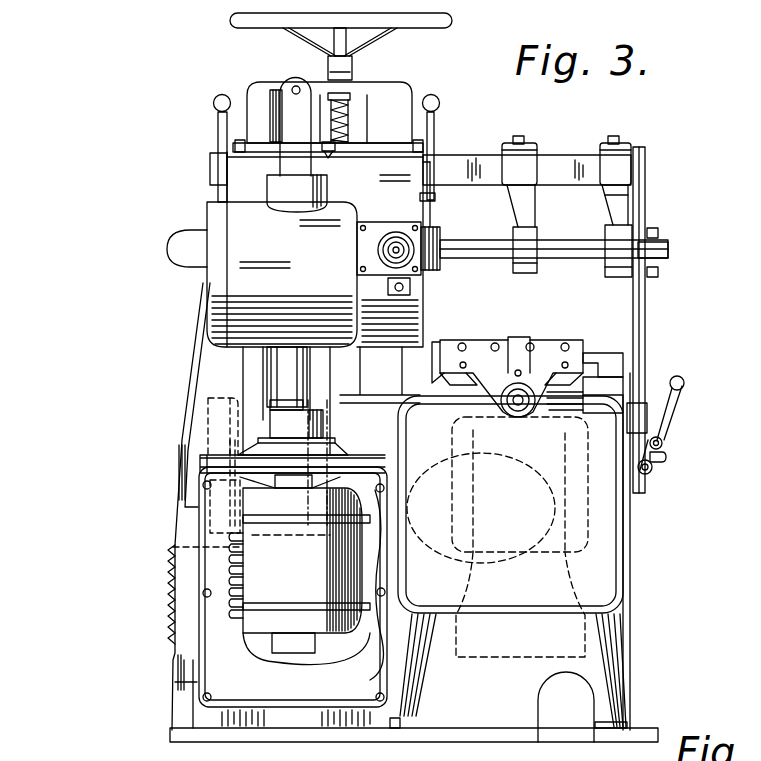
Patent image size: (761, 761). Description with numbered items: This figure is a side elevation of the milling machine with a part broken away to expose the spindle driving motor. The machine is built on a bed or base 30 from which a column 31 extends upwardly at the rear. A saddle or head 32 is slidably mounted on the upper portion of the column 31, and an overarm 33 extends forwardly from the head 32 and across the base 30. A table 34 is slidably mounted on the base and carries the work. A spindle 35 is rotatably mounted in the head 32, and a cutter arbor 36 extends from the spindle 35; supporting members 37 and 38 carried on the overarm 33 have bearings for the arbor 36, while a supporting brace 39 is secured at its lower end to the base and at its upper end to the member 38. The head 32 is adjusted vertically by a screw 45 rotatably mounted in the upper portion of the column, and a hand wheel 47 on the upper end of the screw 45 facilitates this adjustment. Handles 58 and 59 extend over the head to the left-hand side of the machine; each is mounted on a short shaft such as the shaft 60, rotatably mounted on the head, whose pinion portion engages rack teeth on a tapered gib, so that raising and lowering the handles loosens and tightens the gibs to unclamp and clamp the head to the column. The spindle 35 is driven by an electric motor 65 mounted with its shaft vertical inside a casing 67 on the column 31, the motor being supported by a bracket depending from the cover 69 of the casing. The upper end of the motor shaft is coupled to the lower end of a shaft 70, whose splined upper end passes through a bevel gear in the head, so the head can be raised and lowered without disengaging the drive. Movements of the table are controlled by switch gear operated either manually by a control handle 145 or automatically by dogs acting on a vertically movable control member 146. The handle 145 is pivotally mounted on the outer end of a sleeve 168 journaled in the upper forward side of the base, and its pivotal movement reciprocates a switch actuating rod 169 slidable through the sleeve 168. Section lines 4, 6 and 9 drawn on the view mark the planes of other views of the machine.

The section line 4- 4 is at (167, 248).
The section line 6- 6 is at (350, 13).
The section line 9- 9 is at (520, 600).
The base 30 is at (572, 670).
The column 31 is at (198, 383).
The head 32 is at (405, 173).
The overarm 33 is at (482, 163).
The table 34 is at (572, 343).
The spindle 35 is at (433, 272).
The cutter arbor 36 is at (492, 254).
The supporting member 37 is at (527, 215).
The supporting member 38 is at (617, 205).
The supporting brace 39 is at (645, 335).
The screw 45 is at (351, 126).
The hand wheel 47 is at (452, 22).
The handle 58 is at (436, 96).
The handle 59 is at (213, 103).
The short shaft 60 is at (412, 752).
The electric motor 65 is at (299, 532).
The casing 67 is at (200, 558).
The cover 69 is at (222, 455).
The shaft 70 is at (295, 355).
The manual control handle 145 is at (668, 410).
The vertically movable member 146 is at (612, 362).
The sleeve 168 is at (650, 470).
The switch actuating rod 169 is at (666, 459).